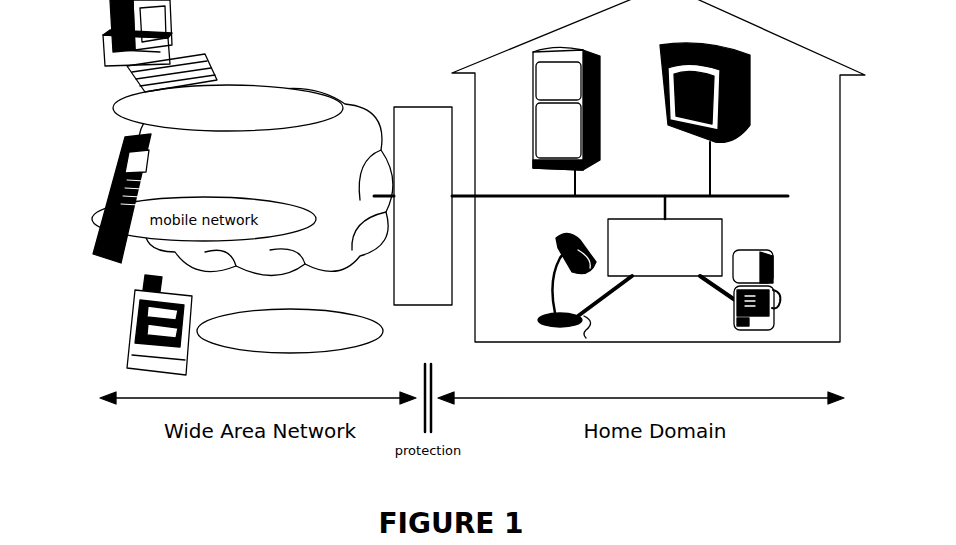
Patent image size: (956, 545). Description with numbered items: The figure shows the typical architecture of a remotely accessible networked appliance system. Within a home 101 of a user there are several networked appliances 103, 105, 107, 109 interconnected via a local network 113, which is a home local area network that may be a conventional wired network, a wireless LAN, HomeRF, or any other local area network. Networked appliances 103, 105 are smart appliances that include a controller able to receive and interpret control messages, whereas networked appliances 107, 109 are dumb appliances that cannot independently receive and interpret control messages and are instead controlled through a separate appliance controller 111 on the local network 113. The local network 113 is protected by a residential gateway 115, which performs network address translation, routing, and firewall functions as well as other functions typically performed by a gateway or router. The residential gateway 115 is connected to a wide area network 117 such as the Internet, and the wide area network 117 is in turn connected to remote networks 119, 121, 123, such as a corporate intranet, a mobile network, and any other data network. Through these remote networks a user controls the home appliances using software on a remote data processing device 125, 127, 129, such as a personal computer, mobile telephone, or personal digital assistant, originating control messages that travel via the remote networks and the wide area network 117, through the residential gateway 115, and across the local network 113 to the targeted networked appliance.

The home 101 is at (843, 200).
The networked appliance 103 is at (603, 150).
The networked appliance 105 is at (757, 90).
The networked appliance 107 is at (557, 260).
The networked appliance 109 is at (736, 314).
The appliance controller 111 is at (724, 224).
The local network 113 is at (500, 194).
The residential gateway 115 is at (413, 106).
The wide area network 117 is at (345, 121).
The remote network 119 is at (283, 88).
The remote network 121 is at (283, 198).
The remote network 123 is at (338, 310).
The remote data processing device 125 is at (114, 64).
The remote data processing device 127 is at (114, 180).
The remote data processing device 129 is at (132, 296).